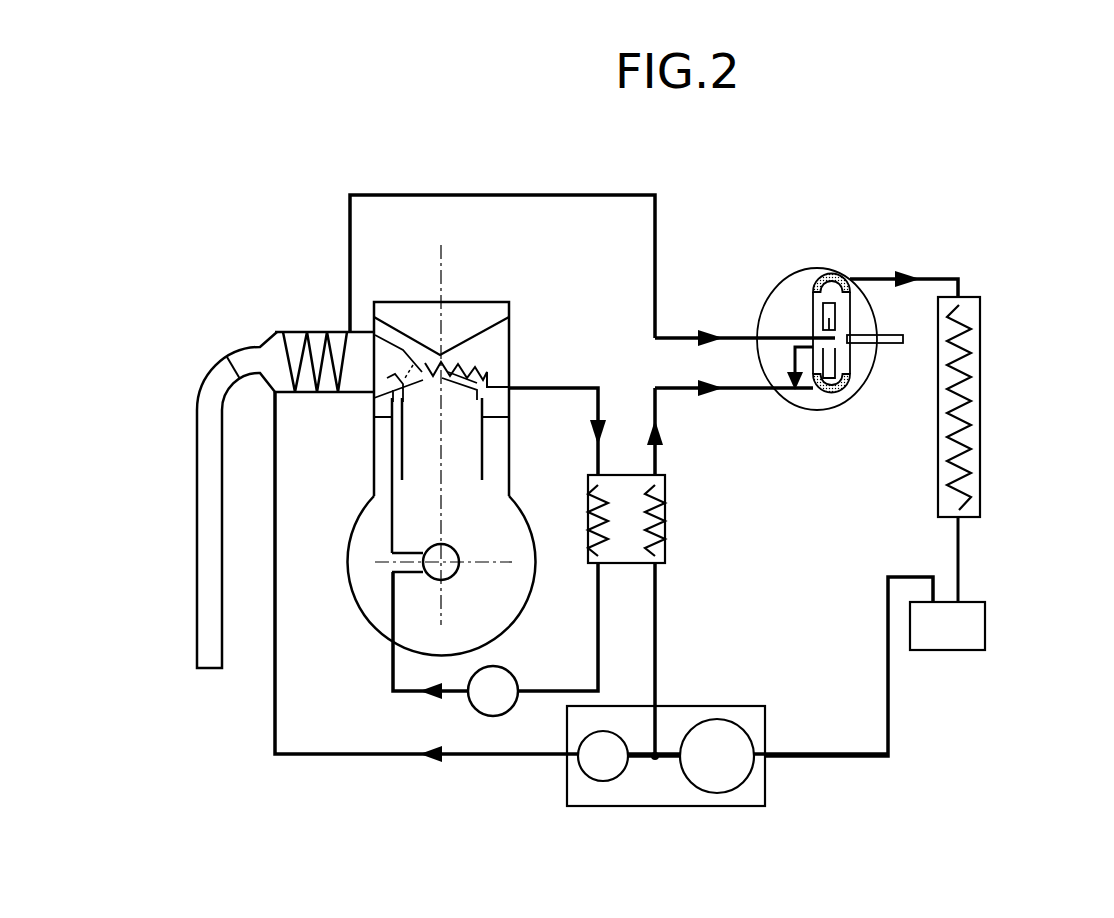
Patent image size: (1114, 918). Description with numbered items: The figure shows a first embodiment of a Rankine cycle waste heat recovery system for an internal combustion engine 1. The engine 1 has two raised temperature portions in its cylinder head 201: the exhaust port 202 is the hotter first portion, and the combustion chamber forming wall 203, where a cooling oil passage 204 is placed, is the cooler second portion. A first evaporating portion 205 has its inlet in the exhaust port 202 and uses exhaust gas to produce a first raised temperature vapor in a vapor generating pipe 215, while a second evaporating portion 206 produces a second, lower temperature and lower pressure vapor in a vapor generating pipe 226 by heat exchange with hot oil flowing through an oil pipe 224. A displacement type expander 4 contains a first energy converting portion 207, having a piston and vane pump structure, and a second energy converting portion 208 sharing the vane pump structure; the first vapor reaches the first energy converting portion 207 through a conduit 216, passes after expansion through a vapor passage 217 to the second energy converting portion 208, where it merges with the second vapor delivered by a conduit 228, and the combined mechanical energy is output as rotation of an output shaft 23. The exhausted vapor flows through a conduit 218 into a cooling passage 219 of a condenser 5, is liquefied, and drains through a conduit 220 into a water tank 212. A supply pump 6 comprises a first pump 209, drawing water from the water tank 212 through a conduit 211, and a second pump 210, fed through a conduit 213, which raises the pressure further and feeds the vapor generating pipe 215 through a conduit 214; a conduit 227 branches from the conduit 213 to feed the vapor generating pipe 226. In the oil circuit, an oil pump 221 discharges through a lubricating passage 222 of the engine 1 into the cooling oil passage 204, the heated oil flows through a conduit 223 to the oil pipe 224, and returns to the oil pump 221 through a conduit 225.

The internal combustion engine 1 is at (444, 438).
The displacement type expander 4 is at (837, 315).
The condenser 5 is at (1009, 407).
The supply pump 6 is at (679, 775).
The output shaft 23 is at (882, 338).
The cylinder head 201 is at (403, 302).
The exhaust port 202 is at (418, 362).
The combustion chamber forming wall 203 is at (447, 377).
The cooling oil passage 204 is at (470, 367).
The first evaporating portion 205 is at (292, 347).
The second evaporating portion 206 is at (670, 496).
The first energy converting portion 207 is at (833, 360).
The second energy converting portion 208 is at (812, 278).
The first pump 209 is at (717, 719).
The second pump 210 is at (600, 779).
The conduit 211 is at (888, 737).
The water tank 212 is at (948, 650).
The conduit 213 is at (640, 758).
The conduit 214 is at (275, 705).
The vapor generating pipe 215 is at (308, 393).
The conduit 216 is at (612, 195).
The vapor passage 217 is at (792, 362).
The conduit 218 is at (877, 279).
The cooling passage 219 is at (981, 353).
The conduit 220 is at (960, 575).
The oil pump 221 is at (468, 706).
The lubricating passage 222 is at (387, 533).
The conduit 223 is at (599, 402).
The oil pipe 224 is at (588, 505).
The conduit 225 is at (598, 642).
The vapor generating pipe 226 is at (655, 522).
The conduit 227 is at (657, 622).
The conduit 228 is at (747, 387).